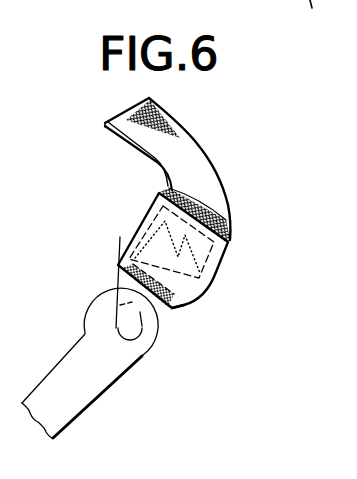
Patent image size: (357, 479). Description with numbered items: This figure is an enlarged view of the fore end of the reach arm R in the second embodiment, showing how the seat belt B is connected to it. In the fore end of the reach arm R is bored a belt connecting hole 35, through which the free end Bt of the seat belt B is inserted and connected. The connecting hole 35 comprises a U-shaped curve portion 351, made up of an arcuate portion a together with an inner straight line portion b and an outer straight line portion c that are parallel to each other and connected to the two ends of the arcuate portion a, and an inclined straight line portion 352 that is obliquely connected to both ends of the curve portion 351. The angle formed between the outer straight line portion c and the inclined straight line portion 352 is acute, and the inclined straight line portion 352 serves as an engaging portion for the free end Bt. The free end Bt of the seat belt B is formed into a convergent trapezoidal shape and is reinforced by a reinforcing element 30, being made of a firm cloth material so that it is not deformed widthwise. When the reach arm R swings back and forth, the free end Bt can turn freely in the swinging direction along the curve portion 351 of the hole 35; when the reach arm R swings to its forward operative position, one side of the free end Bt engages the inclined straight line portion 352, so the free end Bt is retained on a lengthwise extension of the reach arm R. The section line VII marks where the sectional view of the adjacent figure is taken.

The seat belt B is at (193, 138).
The section line VII— VII is at (229, 176).
The reinforcing element 30 is at (220, 258).
The inclined straight line portion 352 is at (116, 323).
The free end of the seat belt Bt is at (172, 308).
The U-shaped curve portion 351 is at (190, 323).
The arcuate portion a is at (138, 337).
The inner straight line portion b is at (130, 362).
The outer straight line portion c is at (144, 324).
The belt connecting hole 35 is at (127, 343).
The reach arm R is at (70, 414).